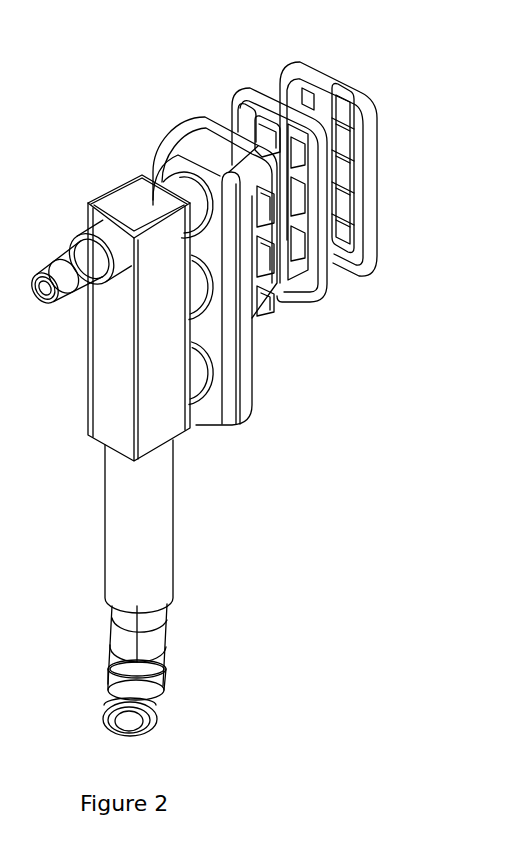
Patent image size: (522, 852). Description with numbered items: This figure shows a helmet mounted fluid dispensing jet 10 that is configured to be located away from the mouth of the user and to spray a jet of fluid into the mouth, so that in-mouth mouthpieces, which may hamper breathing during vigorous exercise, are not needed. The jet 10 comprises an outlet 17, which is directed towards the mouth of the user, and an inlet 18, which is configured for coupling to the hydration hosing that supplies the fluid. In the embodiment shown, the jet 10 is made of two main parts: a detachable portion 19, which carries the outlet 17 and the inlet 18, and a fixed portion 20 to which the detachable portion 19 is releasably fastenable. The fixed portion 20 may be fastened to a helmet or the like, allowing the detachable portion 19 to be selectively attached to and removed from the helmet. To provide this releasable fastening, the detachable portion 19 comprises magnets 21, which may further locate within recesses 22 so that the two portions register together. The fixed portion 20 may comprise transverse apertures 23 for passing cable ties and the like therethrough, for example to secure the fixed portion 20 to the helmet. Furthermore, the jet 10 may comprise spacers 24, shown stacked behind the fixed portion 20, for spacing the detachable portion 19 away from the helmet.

The fluid dispensing jet 10 is at (223, 368).
The outlet 17 is at (44, 260).
The inlet 18 is at (157, 703).
The detachable portion 19 is at (173, 354).
The fixed portion 20 is at (236, 300).
The magnets 21 is at (195, 388).
The recesses 22 is at (200, 382).
The transverse apertures 23 is at (263, 313).
The spacers 24 is at (364, 107).